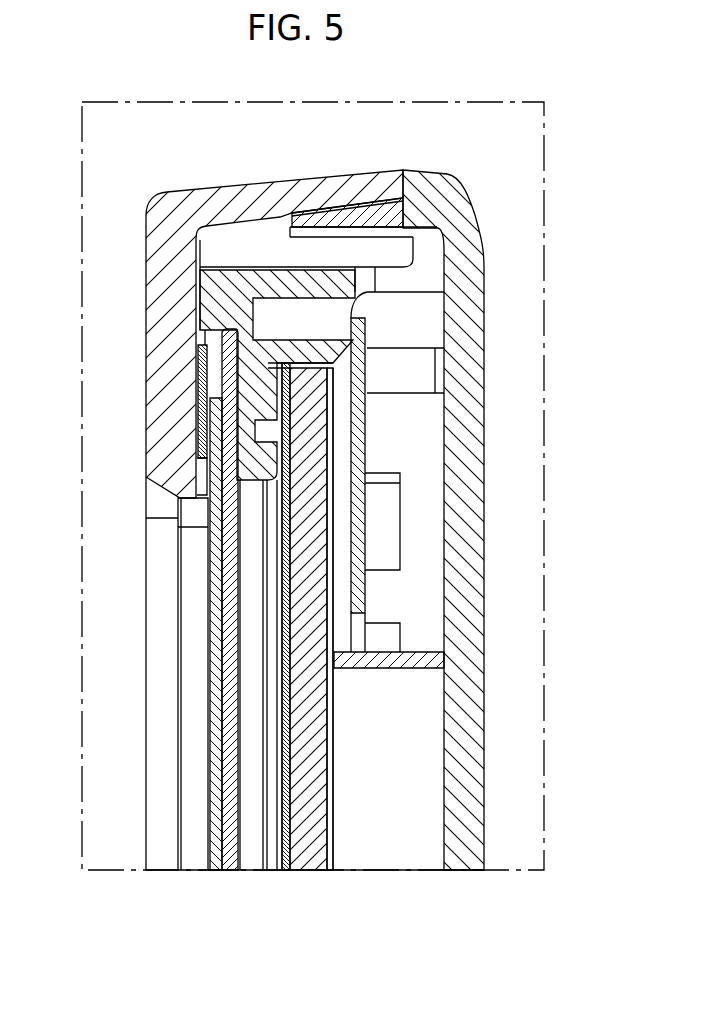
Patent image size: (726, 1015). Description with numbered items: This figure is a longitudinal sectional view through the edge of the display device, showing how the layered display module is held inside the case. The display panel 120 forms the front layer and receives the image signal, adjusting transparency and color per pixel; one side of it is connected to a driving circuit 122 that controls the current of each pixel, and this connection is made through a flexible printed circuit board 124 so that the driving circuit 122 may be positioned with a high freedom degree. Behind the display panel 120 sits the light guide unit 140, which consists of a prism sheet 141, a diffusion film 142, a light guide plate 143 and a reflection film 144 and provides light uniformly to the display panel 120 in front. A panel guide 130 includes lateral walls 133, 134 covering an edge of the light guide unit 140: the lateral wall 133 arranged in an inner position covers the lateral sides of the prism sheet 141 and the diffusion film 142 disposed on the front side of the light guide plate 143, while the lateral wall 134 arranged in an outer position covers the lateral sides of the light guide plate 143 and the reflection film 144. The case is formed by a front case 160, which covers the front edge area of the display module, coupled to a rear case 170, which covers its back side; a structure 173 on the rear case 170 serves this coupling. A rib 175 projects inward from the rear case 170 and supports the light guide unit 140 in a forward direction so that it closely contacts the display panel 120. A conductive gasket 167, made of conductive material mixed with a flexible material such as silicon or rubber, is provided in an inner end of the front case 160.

The display panel 120 is at (220, 572).
The driving circuit 122 is at (357, 443).
The flexible printed circuit board 124 is at (380, 362).
The panel guide 130 is at (247, 360).
The lateral wall 133 is at (315, 350).
The lateral wall 134 is at (287, 282).
The light guide unit 140 is at (292, 671).
The prism sheet 141 is at (277, 873).
The diffusion film 142 is at (287, 873).
The light guide plate 143 is at (308, 873).
The reflection film 144 is at (350, 652).
The front case 160 is at (318, 187).
The conductive gasket 167 is at (205, 408).
The rear case 170 is at (470, 305).
The coupling structure 173 is at (368, 213).
The rib 175 is at (413, 658).